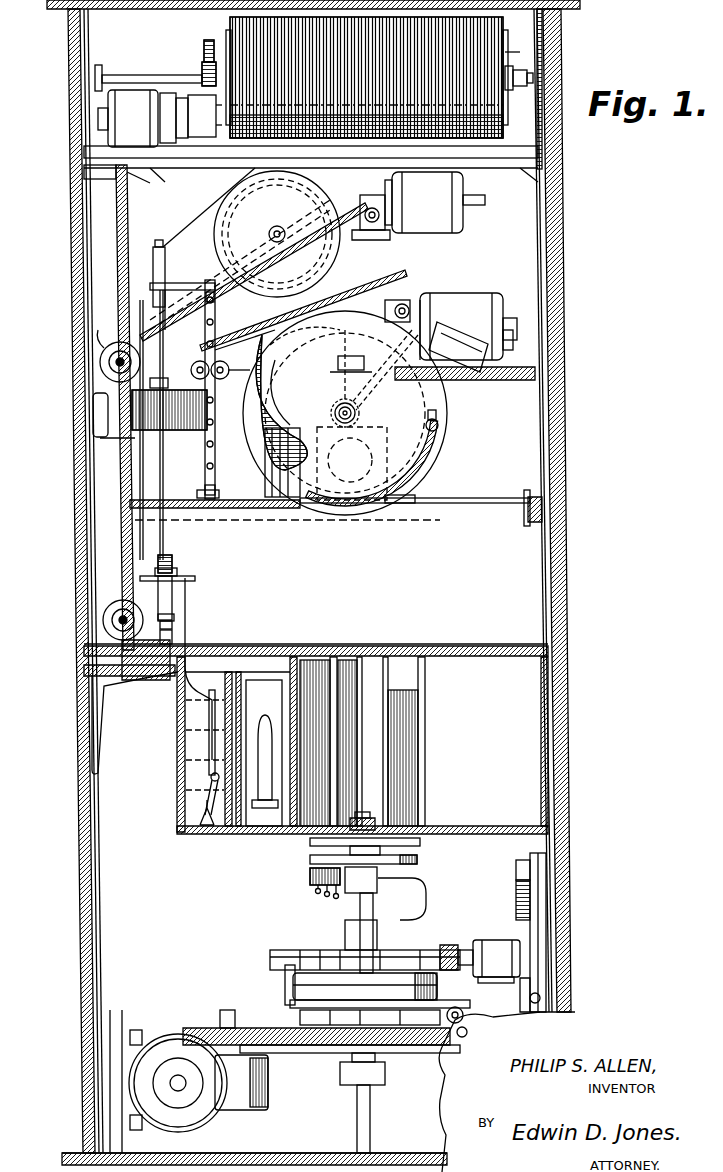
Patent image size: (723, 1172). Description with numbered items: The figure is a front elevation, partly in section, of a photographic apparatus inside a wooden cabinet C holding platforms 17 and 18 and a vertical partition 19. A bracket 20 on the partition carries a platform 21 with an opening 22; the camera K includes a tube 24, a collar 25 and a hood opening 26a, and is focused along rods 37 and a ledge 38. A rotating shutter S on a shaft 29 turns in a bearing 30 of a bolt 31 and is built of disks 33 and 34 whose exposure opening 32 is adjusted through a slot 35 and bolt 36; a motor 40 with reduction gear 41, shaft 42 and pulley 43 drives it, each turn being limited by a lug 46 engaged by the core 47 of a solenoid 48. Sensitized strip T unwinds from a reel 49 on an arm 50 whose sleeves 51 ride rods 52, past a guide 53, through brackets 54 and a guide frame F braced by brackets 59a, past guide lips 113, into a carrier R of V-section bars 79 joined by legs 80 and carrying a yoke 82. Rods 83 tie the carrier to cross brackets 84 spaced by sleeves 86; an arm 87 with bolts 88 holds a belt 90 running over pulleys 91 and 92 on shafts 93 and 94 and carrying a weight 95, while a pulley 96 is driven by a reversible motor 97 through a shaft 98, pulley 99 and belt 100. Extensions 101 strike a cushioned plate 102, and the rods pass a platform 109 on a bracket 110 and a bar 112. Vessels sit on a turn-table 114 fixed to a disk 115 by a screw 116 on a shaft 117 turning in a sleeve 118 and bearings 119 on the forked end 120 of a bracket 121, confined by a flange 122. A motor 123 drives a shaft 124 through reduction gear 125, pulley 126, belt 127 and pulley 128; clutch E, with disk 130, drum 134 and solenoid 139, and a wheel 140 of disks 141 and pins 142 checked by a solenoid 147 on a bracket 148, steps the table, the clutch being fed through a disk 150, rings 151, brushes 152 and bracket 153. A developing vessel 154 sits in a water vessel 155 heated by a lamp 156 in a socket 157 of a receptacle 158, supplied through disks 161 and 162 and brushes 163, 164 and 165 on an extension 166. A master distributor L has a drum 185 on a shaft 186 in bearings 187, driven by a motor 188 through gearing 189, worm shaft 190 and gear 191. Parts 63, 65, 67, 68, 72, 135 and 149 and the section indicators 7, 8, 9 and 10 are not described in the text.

The platform 17 is at (505, 160).
The master current distributor L is at (493, 42).
The drum 185 is at (508, 52).
The bearings 187 is at (105, 74).
The shaft 186 is at (162, 75).
The worm shaft 190 is at (205, 64).
The gear 191 is at (212, 42).
The electric motor 188 is at (128, 115).
The reduction gearing 189 is at (203, 120).
The vertical partition 19 is at (116, 200).
The sleeves 51 is at (160, 244).
The arm 50 is at (210, 206).
The brackets 54 is at (176, 286).
The reel 49 is at (300, 212).
The guide 53 is at (245, 255).
The coil spring belt 100 is at (348, 250).
The shaft 98 is at (371, 205).
The pulley 99 is at (380, 232).
The reversible motor 97 is at (445, 212).
The electrical motor 40 is at (462, 296).
The spring-pressed core 47 is at (433, 340).
The solenoid 48 is at (482, 330).
The reduction gear 41 is at (420, 305).
The grooved pulley 43 is at (400, 300).
The shaft 42 is at (395, 308).
The platform 18 is at (540, 372).
The rotating shutter S is at (455, 412).
The shaft 29 is at (358, 413).
The bearing 30 is at (352, 463).
The bolt 31 is at (345, 360).
The exposure opening 32 is at (345, 330).
The arc 67 is at (306, 340).
The disk 34 is at (292, 420).
The lug 46 is at (412, 348).
The bolt 36 is at (440, 425).
The disk 33 is at (428, 472).
The camera K is at (392, 462).
The slot 35 is at (395, 505).
The rods 37 is at (460, 503).
The ledge 38 is at (530, 522).
The cabinet C is at (568, 510).
The opening 26a is at (351, 483).
The tube 24 is at (270, 500).
The collar 25 is at (300, 490).
The platform 21 is at (282, 510).
The guide lips 113 is at (212, 505).
The rack 63 is at (222, 348).
The gear 65 is at (198, 360).
The link 68 is at (250, 350).
The sensitized photographic strip T is at (212, 297).
The rods 52 is at (155, 305).
The guiding frame F is at (200, 468).
The block 72 is at (200, 492).
The grooved pulley 91 is at (105, 355).
The shaft 93 is at (116, 362).
The grooved pulley 96 is at (108, 345).
The weight 95 is at (92, 410).
The brackets 59a is at (150, 418).
The coil spring belt 90 is at (135, 438).
The opening 22 is at (135, 514).
The bracket 20 is at (138, 537).
The arm 87 is at (150, 577).
The bolts 88 is at (165, 562).
The cross brackets 84 is at (178, 572).
The spacing sleeves 86 is at (174, 595).
The tubular extensions 101 is at (180, 626).
The spring cushioned plate 102 is at (175, 640).
The grooved pulley 92 is at (103, 620).
The shaft 94 is at (119, 624).
The platform 109 is at (88, 678).
The short bar 112 is at (160, 672).
The tank top 149 is at (236, 648).
The bracket 110 is at (95, 716).
The peripheral upstanding flange 122 is at (182, 822).
The larger vessel 155 is at (182, 748).
The rods 83 is at (205, 690).
The strip carrier R is at (205, 740).
The bars 79 is at (208, 760).
The vessel 154 is at (185, 778).
The yoke 82 is at (205, 800).
The U-shaped legs 80 is at (212, 834).
The turn-table 114 is at (190, 836).
The disk 115 is at (232, 836).
The socket 157 is at (262, 820).
The tubular receptacle 158 is at (300, 660).
The electric lamp 156 is at (330, 685).
The screw 116 is at (378, 822).
The metal disk 162 is at (408, 860).
The disk 161 is at (418, 862).
The section line 9 is at (300, 867).
The extension 166 is at (312, 878).
The brush 163 is at (316, 893).
The brush 164 is at (325, 897).
The brush 165 is at (336, 900).
The spaced bearings 119 is at (376, 885).
The shaft 117 is at (350, 927).
The forked end 120 is at (420, 892).
The headed pins 142 is at (300, 950).
The wheel 140 is at (440, 948).
The spaced disks 141 is at (452, 948).
The solenoid 147 is at (496, 945).
The section line 7 is at (265, 955).
The clutch E is at (345, 983).
The support 135 is at (288, 970).
The drum 134 is at (292, 1002).
The disk 130 is at (318, 1010).
The section line 8 is at (262, 985).
The solenoid 139 is at (464, 1018).
The belt 127 is at (272, 1030).
The vertical shaft 124 is at (226, 1012).
The pulley 126 is at (200, 1030).
The motor 123 is at (140, 1083).
The reduction gear 125 is at (245, 1085).
The section line 10 is at (326, 1065).
The upstanding sleeve 118 is at (350, 1105).
The conducting rings 151 is at (347, 1075).
The contact brushes 152 is at (340, 1095).
The bracket 153 is at (355, 1090).
The disk 150 is at (382, 1075).
The bracket 121 is at (520, 888).
The bracket 148 is at (541, 996).
The larger pulley 128 is at (456, 1046).